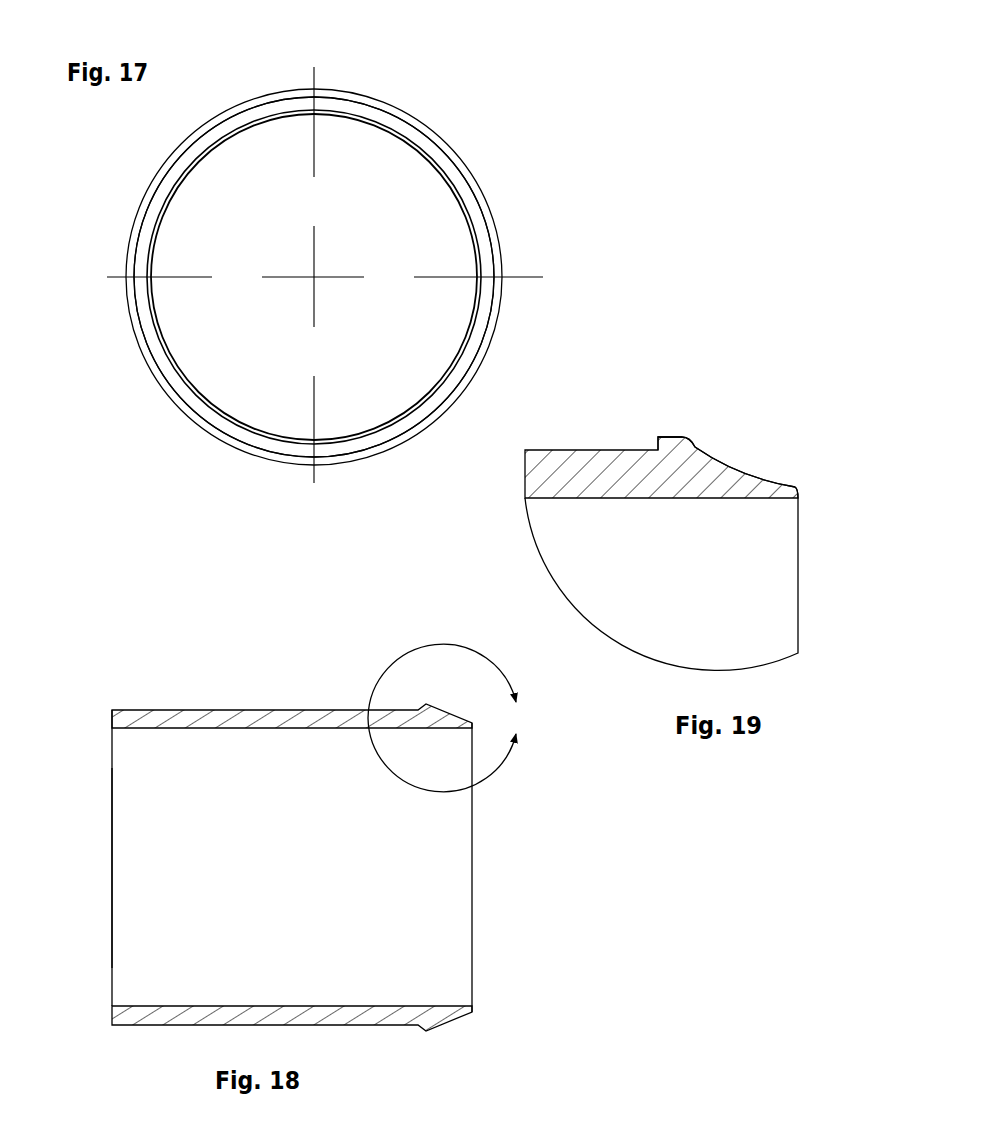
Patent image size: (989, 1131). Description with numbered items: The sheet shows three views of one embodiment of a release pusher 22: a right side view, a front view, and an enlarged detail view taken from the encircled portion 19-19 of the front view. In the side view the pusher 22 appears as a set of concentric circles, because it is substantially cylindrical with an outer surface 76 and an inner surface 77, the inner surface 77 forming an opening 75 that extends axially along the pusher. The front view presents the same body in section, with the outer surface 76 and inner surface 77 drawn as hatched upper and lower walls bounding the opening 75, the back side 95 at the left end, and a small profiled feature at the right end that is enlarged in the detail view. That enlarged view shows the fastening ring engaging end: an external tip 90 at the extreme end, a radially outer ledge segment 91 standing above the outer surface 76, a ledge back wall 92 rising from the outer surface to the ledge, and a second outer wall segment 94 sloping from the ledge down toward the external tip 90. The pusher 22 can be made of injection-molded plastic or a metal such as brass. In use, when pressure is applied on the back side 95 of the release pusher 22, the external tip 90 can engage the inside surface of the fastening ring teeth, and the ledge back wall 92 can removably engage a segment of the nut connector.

In FIG. 17, the release pusher 22 is at (570, 167).
In FIG. 19, the release pusher 22 is at (749, 402).
In FIG. 18, the release pusher 22 is at (538, 1020).
In FIG. 18, the opening 75 is at (170, 830).
In FIG. 17, the outer surface 76 is at (465, 164).
In FIG. 19, the outer surface 76 is at (555, 440).
In FIG. 18, the outer surface 76 is at (264, 700).
In FIG. 17, the inner surface 77 is at (178, 364).
In FIG. 18, the inner surface 77 is at (265, 995).
In FIG. 19, the external tip 90 is at (794, 485).
In FIG. 19, the radially outer ledge segment 91 is at (663, 429).
In FIG. 19, the ledge back wall 92 is at (649, 434).
In FIG. 19, the second outer wall segment 94 is at (688, 439).
In FIG. 18, the back side 95 is at (102, 711).
In FIG. 18, the encircled portion 19-19 is at (452, 718).